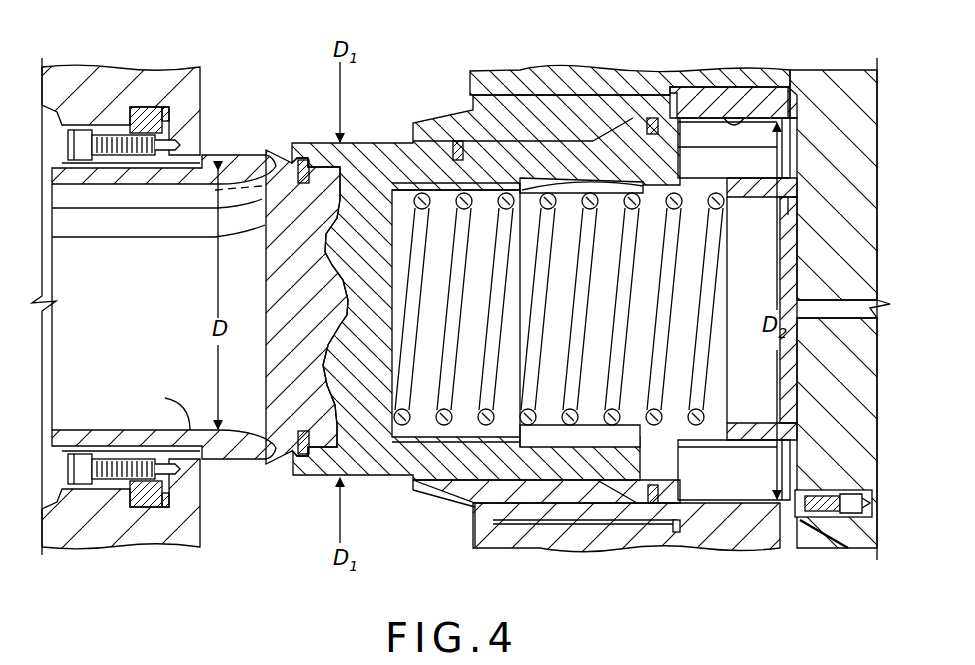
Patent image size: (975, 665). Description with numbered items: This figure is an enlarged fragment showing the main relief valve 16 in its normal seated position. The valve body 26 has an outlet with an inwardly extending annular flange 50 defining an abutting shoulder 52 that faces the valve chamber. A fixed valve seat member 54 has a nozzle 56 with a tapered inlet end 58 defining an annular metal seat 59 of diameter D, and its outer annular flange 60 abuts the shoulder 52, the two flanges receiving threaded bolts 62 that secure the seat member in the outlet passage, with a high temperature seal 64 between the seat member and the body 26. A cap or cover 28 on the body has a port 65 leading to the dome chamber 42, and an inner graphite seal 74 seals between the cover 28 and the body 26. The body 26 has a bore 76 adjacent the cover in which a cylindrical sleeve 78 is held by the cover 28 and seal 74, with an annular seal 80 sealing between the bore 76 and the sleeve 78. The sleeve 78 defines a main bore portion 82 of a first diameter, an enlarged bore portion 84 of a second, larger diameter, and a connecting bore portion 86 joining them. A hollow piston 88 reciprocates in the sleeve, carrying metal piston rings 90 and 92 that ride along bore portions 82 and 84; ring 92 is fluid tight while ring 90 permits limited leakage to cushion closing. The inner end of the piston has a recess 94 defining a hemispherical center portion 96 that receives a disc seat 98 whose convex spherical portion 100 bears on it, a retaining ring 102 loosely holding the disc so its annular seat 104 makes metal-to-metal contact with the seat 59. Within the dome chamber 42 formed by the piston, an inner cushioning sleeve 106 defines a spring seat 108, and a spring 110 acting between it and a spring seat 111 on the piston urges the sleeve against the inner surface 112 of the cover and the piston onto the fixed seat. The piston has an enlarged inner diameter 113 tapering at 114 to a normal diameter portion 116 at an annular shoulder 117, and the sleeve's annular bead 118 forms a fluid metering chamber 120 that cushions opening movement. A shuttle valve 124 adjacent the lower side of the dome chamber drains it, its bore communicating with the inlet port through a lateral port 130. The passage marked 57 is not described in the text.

The main relief valve 16 is at (497, 70).
The valve body 26 is at (70, 76).
The cap or cover 28 is at (825, 76).
The dome chamber 42 is at (787, 248).
The inwardly extending annular flange 50 is at (96, 455).
The abutting surface or shoulder 52 is at (140, 127).
The fixed valve seat member 54 is at (162, 200).
The nozzle 56 is at (187, 417).
The passage 57 is at (97, 337).
The tapered inlet end 58 is at (164, 307).
The annular metal seat 59 is at (273, 468).
The outer annular flange 60 is at (156, 133).
The threaded bolts 62 is at (114, 483).
The high temperature seal 64 is at (169, 114).
The port 65 is at (835, 322).
The inner graphite seal 74 is at (783, 92).
The bore 76 is at (530, 526).
The cylindrical sleeve or cylinder 78 is at (478, 502).
The annular seal 80 is at (698, 530).
The main bore portion 82 is at (416, 480).
The enlarged bore portion 84 is at (724, 120).
The connecting bore portion 86 is at (625, 507).
The hollow piston 88 is at (318, 479).
The metal piston ring 90 is at (450, 493).
The metal piston ring 92 is at (660, 492).
The recess 94 is at (328, 394).
The hemispherical center portion 96 is at (285, 307).
The disc seat 98 is at (278, 148).
The central convex spherical portion 100 is at (330, 332).
The retaining ring 102 is at (303, 160).
The annular seat 104 is at (262, 160).
The inner cushioning sleeve 106 is at (798, 200).
The spring seat 108 is at (715, 423).
The spring 110 is at (712, 280).
The spring seat 111 is at (405, 182).
The inner surface 112 is at (796, 400).
The enlarged inner diameter 113 is at (641, 505).
The taper 114 is at (566, 512).
The normal diameter portion 116 is at (445, 190).
The annular shoulder 117 is at (538, 178).
The annular bead or protuberance 118 is at (647, 175).
The fluid metering chamber 120 is at (688, 444).
The shuttle valve 124 is at (857, 519).
The lateral port 130 is at (838, 540).